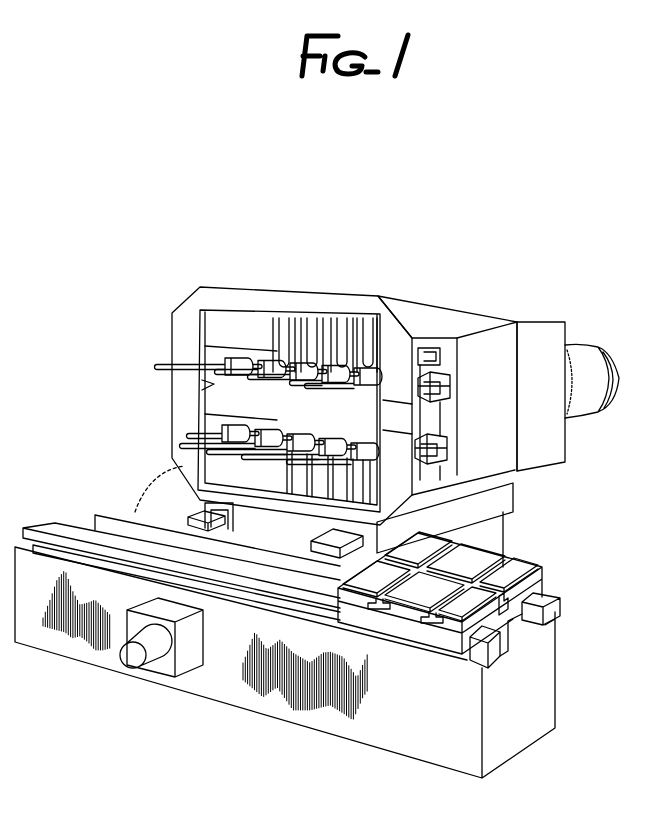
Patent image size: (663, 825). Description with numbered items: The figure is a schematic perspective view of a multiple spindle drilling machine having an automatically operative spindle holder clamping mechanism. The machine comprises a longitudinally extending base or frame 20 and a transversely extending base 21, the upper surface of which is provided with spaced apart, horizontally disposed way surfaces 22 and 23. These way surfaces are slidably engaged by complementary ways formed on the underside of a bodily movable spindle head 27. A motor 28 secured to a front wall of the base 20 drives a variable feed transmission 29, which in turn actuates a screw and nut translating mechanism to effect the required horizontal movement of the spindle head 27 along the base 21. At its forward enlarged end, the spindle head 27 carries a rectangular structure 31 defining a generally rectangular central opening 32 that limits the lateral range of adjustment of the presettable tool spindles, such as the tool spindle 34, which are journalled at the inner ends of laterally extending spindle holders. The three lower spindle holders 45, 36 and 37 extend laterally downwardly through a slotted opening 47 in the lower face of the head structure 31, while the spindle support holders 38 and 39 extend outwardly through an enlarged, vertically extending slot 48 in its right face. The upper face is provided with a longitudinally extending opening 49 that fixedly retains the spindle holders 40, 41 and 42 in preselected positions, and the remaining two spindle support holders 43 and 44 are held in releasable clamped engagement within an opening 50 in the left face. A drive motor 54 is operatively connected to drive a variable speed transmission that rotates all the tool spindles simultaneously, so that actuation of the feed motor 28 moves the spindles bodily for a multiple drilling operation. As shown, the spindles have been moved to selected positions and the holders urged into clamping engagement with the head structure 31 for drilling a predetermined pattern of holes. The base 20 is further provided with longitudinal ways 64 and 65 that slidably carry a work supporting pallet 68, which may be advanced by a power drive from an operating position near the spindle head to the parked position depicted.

The base or frame 20 is at (345, 727).
The transversely extending base 21 is at (240, 522).
The way surface 22 is at (190, 516).
The way surface 23 is at (378, 534).
The spindle head 27 is at (553, 328).
The motor 28 is at (130, 656).
The variable feed transmission 29 is at (184, 665).
The rectangular structure 31 is at (418, 313).
The central opening 32 is at (372, 412).
The tool spindle 34 is at (318, 432).
The spindle holder 36 is at (323, 484).
The spindle holder 37 is at (344, 436).
The spindle support holder 38 is at (448, 454).
The spindle support holder 39 is at (451, 388).
The spindle holder 40 is at (345, 322).
The spindle holder 41 is at (322, 322).
The spindle holder 42 is at (289, 320).
The spindle support holder 43 is at (252, 356).
The spindle support holder 44 is at (228, 424).
The spindle holder 45 is at (273, 481).
The slotted opening 47 is at (357, 490).
The vertically extending slot 48 is at (448, 359).
The longitudinally extending opening 49 is at (208, 323).
The opening 50 is at (210, 392).
The drive motor 54 is at (592, 351).
The longitudinal way 64 is at (480, 641).
The longitudinal way 65 is at (558, 606).
The work supporting pallet 68 is at (520, 578).